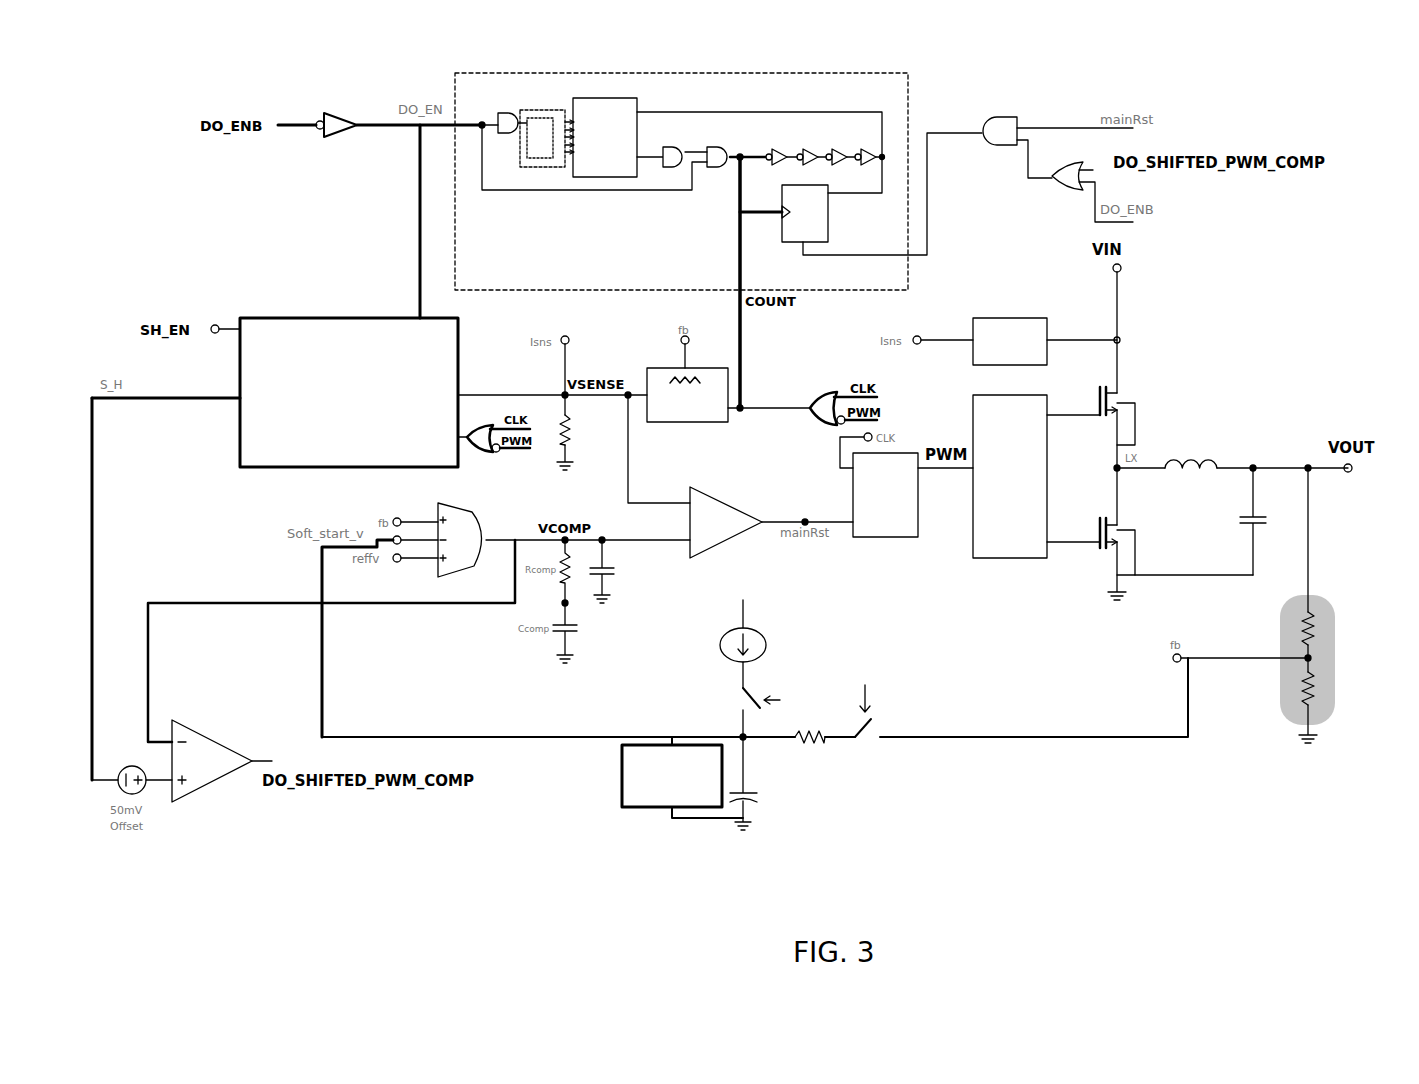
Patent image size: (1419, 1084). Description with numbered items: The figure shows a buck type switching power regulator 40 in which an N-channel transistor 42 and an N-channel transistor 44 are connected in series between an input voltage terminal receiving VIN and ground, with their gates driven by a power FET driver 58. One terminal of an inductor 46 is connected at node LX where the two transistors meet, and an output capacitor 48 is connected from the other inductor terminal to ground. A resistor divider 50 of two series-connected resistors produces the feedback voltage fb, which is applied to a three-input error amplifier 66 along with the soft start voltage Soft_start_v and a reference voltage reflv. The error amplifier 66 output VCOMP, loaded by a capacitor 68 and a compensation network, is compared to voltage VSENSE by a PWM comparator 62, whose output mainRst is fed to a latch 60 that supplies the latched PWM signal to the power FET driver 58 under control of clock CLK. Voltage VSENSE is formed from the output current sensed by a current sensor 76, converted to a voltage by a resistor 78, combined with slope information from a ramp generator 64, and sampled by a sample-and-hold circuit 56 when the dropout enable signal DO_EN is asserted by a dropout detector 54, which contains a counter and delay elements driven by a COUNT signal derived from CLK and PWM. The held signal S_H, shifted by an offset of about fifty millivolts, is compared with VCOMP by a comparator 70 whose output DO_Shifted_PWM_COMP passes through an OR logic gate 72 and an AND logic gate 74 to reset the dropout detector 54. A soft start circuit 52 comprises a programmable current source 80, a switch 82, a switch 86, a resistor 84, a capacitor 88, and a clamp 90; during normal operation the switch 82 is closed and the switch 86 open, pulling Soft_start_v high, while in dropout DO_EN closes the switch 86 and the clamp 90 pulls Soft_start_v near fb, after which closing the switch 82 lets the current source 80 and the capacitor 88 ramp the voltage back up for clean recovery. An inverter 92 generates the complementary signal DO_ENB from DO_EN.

The switching power regulator 40 is at (1071, 908).
The N-channel transistor 42 is at (1098, 410).
The N-channel transistor 44 is at (1098, 548).
The inductor 46 is at (1165, 468).
The capacitor 48 is at (1276, 517).
The resistor divider 50 is at (1335, 615).
The soft start circuit 52 is at (849, 823).
The dropout detector 54 is at (800, 73).
The sample-and-hold circuit 56 is at (360, 318).
The power FET driver 58 is at (1022, 558).
The latch 60 is at (872, 537).
The PWM comparator 62 is at (710, 494).
The ramp generator 64 is at (664, 368).
The error amplifier 66 is at (455, 576).
The capacitor 68 is at (614, 572).
The comparator 70 is at (195, 735).
The OR logic gate 72 is at (1073, 195).
The AND logic gate 74 is at (1005, 146).
The current sensor 76 is at (1025, 318).
The resistor 78 is at (571, 446).
The programmable current source 80 is at (766, 654).
The switch 82 is at (736, 700).
The resistor 84 is at (813, 744).
The switch 86 is at (870, 742).
The capacitor 88 is at (754, 804).
The clamp 90 is at (622, 786).
The inverter 92 is at (352, 136).